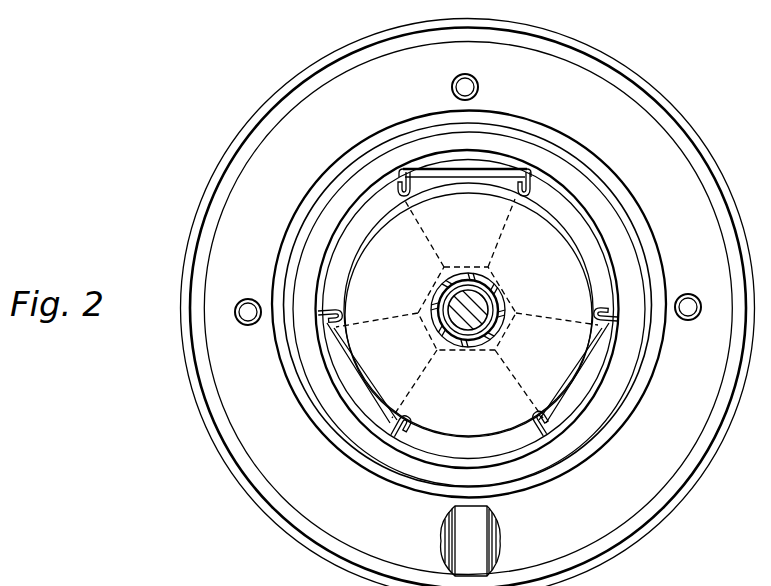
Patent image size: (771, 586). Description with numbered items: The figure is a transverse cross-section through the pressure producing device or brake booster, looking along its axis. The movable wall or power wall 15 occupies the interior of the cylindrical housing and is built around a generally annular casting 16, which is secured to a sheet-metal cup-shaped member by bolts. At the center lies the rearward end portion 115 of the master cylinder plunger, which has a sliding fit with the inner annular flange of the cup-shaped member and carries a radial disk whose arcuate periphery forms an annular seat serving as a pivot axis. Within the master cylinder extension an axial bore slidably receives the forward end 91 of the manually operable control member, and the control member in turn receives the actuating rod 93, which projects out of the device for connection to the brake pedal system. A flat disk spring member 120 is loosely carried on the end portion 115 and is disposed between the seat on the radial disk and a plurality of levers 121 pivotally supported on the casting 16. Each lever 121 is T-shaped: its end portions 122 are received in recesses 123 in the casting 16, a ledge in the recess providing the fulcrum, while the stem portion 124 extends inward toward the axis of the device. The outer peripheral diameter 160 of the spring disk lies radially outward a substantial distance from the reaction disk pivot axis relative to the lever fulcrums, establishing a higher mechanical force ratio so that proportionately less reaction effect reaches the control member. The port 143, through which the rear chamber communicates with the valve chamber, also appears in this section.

The movable wall 15 is at (188, 372).
The annular casting 16 is at (243, 418).
The forward end of the manually operable control member 91 is at (442, 307).
The actuating rod 93 is at (472, 315).
The rearward end portion of the master cylinder plunger 115 is at (443, 287).
The flat disk spring member 120 is at (580, 277).
The lever members 121 is at (476, 167).
The end portions of the lever members 122 is at (509, 199).
The recesses 123 is at (397, 193).
The stem portion of the lever members 124 is at (500, 265).
The port 143 is at (473, 553).
The outer peripheral diameter of the spring disk 160 is at (573, 240).